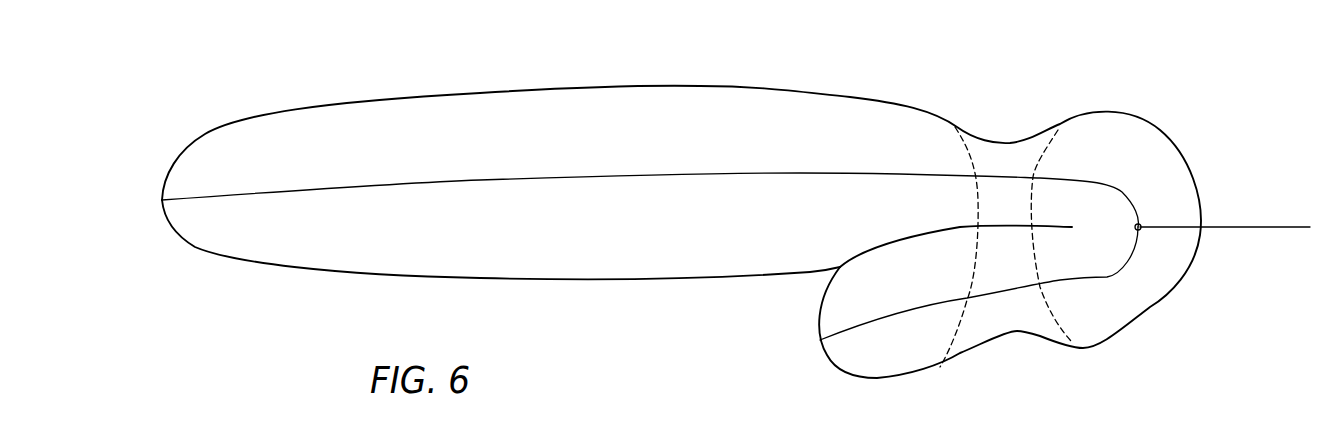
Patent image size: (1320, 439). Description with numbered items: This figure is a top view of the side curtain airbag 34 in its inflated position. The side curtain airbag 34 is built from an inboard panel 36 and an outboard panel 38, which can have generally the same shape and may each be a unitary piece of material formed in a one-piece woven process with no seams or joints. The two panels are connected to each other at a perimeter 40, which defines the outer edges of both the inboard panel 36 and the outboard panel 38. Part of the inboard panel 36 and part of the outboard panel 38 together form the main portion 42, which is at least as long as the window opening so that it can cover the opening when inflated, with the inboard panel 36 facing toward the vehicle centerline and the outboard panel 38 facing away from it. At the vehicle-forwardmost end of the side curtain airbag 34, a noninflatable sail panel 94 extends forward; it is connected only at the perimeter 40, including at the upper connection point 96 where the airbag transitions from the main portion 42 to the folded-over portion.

The side curtain airbag 34 is at (710, 83).
The inboard panel 36 is at (277, 255).
The outboard panel 38 is at (275, 142).
The perimeter 40 is at (401, 182).
The main portion 42 is at (850, 112).
The sail panel 94 is at (1250, 228).
The upper connection point 96 is at (1140, 230).